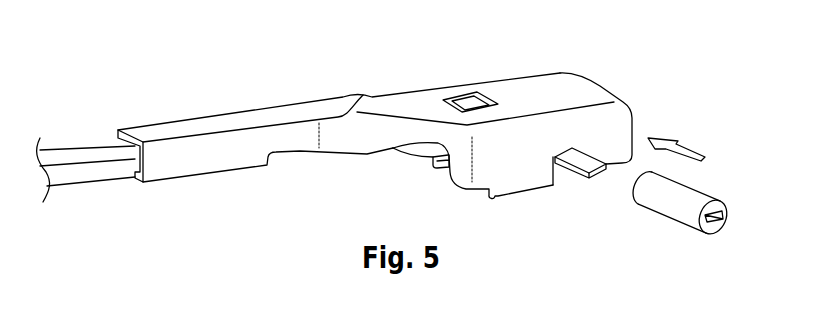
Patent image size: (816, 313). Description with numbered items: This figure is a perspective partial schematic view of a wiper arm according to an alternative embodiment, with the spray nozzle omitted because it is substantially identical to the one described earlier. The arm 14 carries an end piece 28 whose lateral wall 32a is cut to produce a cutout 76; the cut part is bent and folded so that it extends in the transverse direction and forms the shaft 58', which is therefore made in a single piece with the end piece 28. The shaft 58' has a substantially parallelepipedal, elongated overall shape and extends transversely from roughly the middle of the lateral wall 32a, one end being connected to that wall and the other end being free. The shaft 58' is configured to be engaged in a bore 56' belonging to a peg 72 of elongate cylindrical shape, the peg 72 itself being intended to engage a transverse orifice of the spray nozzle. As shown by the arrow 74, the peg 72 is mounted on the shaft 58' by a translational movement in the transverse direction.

The arm 14 is at (66, 150).
The end piece 28 is at (520, 92).
The lateral wall 32a is at (633, 117).
The arrow 74 is at (690, 149).
The cutout 76 is at (562, 172).
The shaft 58' is at (580, 189).
The peg 72 is at (684, 203).
The bore 56' is at (710, 250).